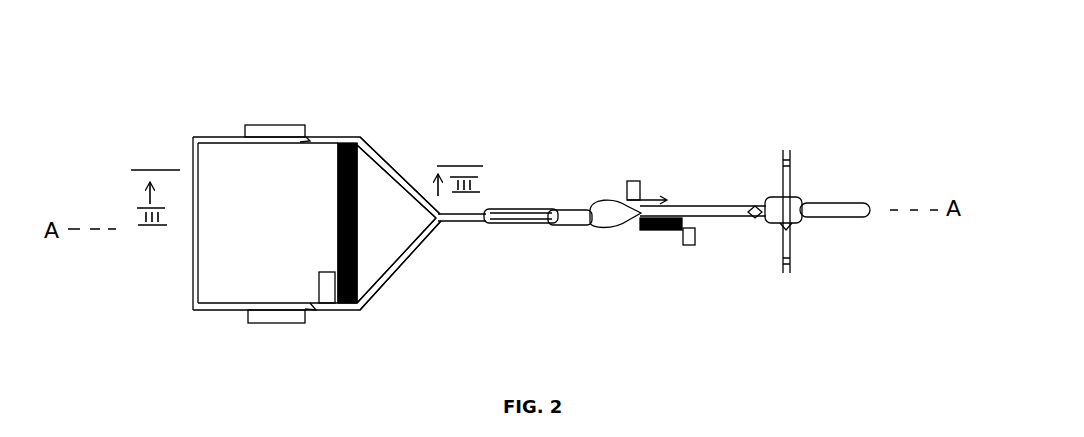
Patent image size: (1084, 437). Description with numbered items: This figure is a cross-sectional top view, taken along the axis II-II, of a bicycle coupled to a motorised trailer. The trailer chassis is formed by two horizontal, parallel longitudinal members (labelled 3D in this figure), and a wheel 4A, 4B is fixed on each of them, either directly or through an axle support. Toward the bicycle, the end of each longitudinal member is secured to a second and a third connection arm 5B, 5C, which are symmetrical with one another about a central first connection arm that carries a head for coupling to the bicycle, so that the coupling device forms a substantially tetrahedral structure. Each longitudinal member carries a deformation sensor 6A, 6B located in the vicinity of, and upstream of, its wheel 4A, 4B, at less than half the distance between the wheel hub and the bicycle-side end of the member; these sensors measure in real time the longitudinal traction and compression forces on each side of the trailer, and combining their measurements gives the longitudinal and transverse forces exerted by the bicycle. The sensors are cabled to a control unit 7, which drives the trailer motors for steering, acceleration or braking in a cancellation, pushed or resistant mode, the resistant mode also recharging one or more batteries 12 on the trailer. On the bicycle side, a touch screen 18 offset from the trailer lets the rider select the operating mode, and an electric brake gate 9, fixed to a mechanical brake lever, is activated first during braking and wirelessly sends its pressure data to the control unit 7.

The trailer body 3D is at (218, 136).
The wheel 4A is at (277, 112).
The wheel 4B is at (278, 337).
The second connection arm 5B is at (405, 160).
The third connection arm 5C is at (413, 258).
The deformation sensor 6A is at (309, 134).
The deformation sensor 6B is at (316, 314).
The control unit 7 is at (340, 303).
The battery 12 is at (357, 240).
The touch screen 18 is at (770, 236).
The electric brake gate 9 is at (792, 268).